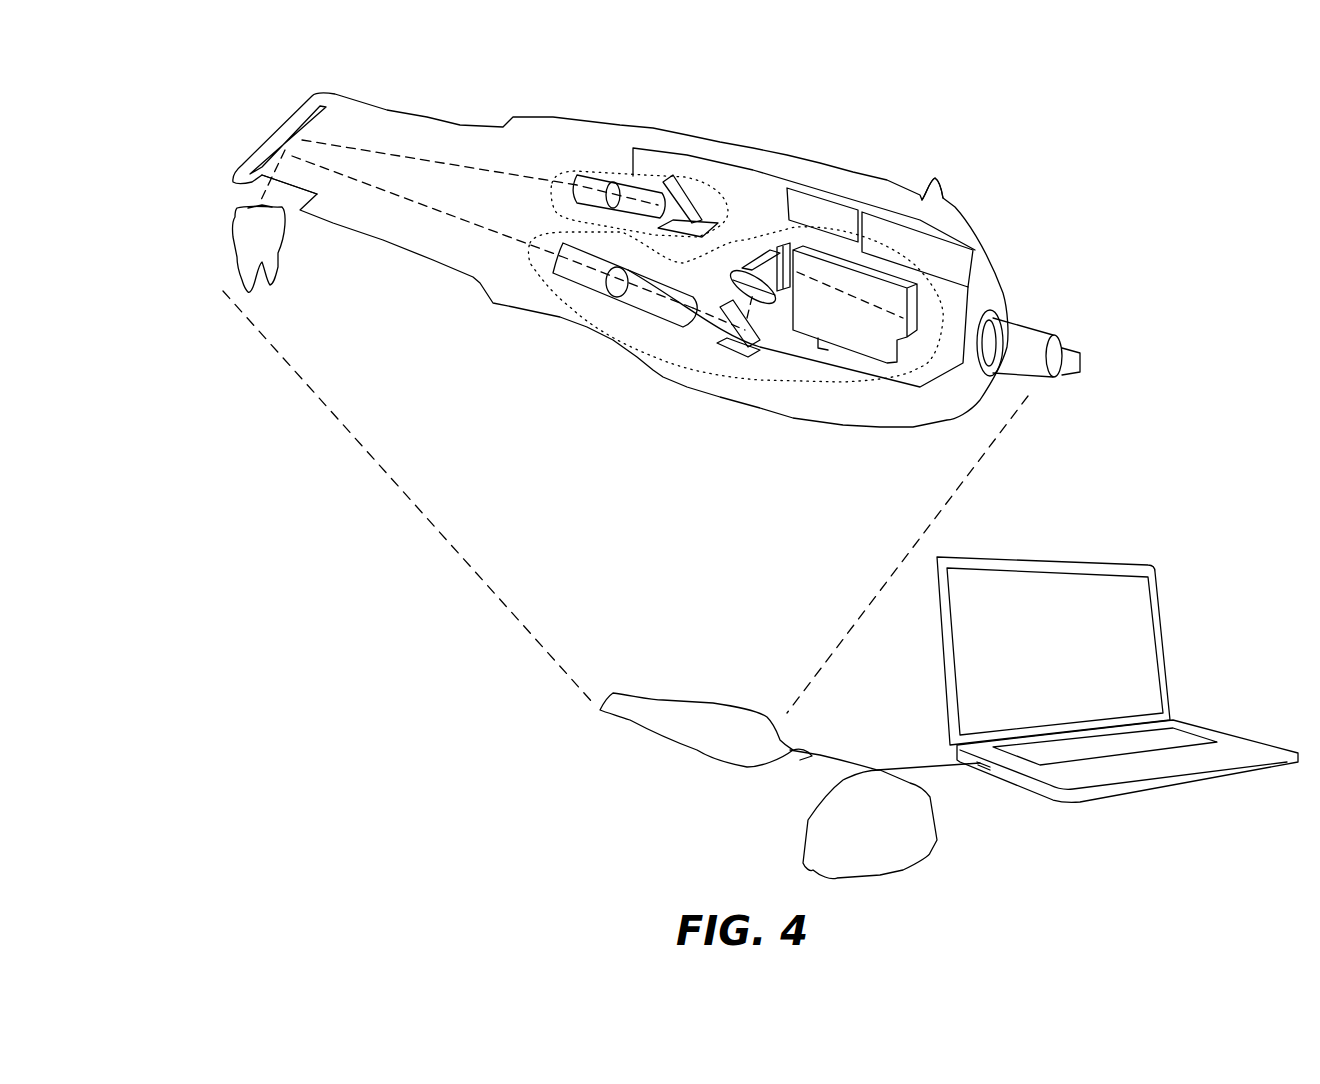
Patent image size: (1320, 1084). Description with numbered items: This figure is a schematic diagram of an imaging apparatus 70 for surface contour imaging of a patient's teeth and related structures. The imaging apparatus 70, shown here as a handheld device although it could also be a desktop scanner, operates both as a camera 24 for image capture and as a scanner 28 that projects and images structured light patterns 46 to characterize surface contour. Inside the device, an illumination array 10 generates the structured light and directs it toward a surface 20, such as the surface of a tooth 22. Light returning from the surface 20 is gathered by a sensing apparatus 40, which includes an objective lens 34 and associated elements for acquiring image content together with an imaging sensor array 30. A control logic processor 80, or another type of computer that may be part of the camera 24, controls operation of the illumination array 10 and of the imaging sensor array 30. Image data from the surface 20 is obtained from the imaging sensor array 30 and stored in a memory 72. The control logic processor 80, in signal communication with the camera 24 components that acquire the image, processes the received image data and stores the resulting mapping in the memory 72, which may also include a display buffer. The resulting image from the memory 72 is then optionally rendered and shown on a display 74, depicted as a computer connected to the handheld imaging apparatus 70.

The illumination array 10 is at (757, 378).
The surface 20 is at (233, 215).
The tooth 22 is at (250, 255).
The camera 24 is at (943, 198).
The scanner 28 is at (553, 347).
The imaging sensor array 30 is at (717, 220).
The objective lens 34 is at (627, 268).
The sensing apparatus 40 is at (697, 176).
The structured light patterns 46 is at (415, 157).
The imaging apparatus 70 is at (696, 810).
The memory 72 is at (845, 231).
The display 74 is at (1031, 647).
The control logic processor 80 is at (923, 254).